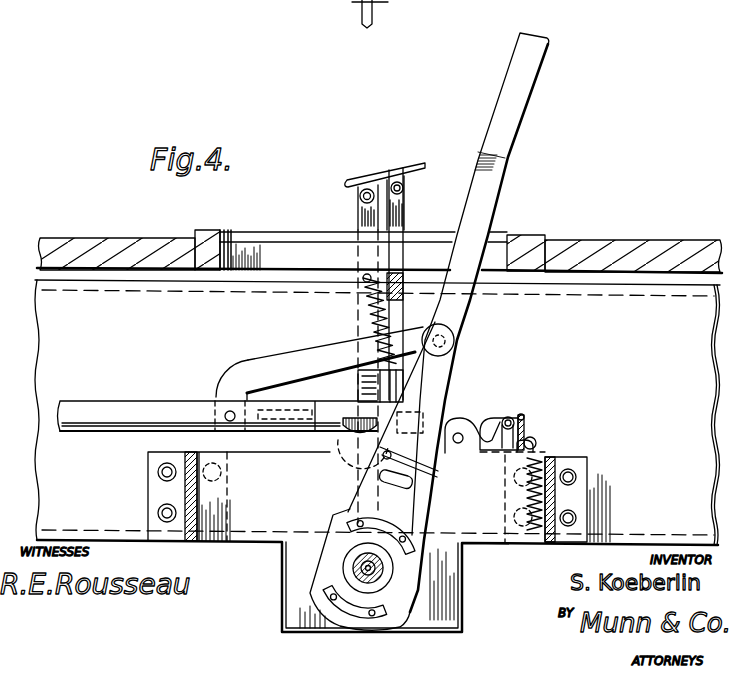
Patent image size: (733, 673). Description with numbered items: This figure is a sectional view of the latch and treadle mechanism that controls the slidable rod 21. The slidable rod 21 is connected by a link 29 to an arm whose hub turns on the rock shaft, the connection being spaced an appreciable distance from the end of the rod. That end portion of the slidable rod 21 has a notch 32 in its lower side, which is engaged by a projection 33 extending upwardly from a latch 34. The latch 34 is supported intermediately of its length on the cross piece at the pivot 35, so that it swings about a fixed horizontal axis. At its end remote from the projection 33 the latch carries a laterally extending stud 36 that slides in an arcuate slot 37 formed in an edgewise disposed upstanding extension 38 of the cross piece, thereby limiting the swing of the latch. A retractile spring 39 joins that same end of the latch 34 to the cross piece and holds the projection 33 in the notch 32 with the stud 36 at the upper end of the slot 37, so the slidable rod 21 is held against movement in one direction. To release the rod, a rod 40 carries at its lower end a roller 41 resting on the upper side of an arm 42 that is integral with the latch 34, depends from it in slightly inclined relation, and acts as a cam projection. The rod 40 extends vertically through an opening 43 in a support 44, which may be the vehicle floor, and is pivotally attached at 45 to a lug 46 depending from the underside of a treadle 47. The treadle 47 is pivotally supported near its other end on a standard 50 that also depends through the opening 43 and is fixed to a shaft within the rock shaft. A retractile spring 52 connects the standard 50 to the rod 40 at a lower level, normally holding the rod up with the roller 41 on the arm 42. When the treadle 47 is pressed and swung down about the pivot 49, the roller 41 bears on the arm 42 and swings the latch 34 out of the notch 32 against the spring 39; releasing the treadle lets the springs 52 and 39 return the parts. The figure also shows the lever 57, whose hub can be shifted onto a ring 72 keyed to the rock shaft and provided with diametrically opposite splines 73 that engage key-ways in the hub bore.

The slidable rod 21 is at (176, 410).
The link 29 is at (289, 363).
The notch 32 is at (353, 420).
The projection 33 is at (412, 418).
The latch 34 is at (454, 423).
The pivot 35 is at (487, 421).
The stud 36 is at (526, 416).
The arcuate slot 37 is at (533, 436).
The upstanding extension 38 is at (537, 445).
The retractile spring 39 is at (560, 460).
The rod 40 is at (396, 306).
The roller 41 is at (423, 466).
The arm 42 is at (357, 457).
The opening 43 is at (527, 253).
The support 44 is at (612, 248).
The pivotal attachment 45 is at (406, 200).
The lug 46 is at (403, 187).
The treadle 47 is at (392, 172).
The pivot 49 is at (360, 195).
The standard 50 is at (365, 283).
The retractile spring 52 is at (375, 318).
The lever 57 is at (445, 313).
The ring 72 is at (344, 562).
The splines 73 is at (365, 534).